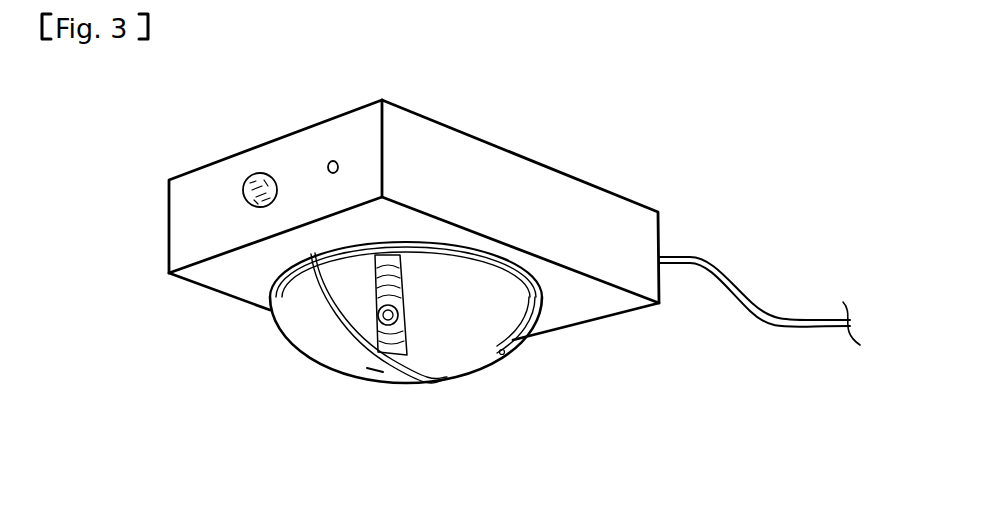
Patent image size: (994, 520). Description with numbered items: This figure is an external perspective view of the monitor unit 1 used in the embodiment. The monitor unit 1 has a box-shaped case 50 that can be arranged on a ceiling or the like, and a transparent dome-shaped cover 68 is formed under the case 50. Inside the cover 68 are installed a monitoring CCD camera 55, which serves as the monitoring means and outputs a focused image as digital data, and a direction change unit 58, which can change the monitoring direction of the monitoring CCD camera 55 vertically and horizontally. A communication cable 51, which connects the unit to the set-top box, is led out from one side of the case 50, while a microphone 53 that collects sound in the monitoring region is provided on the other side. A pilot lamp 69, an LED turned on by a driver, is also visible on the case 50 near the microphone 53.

The monitor unit 1 is at (565, 127).
The case 50 is at (167, 229).
The communication cable 51 is at (717, 270).
The microphone 53 is at (250, 180).
The monitoring CCD camera 55 is at (382, 322).
The direction change unit 58 is at (527, 333).
The cover 68 is at (310, 317).
The pilot lamp 69 is at (327, 162).